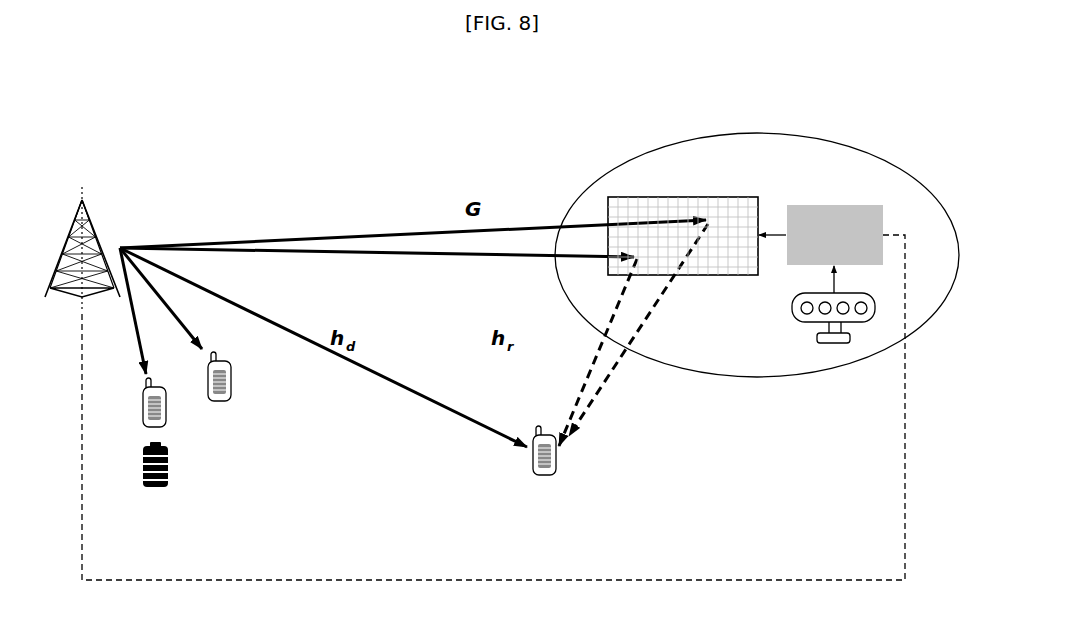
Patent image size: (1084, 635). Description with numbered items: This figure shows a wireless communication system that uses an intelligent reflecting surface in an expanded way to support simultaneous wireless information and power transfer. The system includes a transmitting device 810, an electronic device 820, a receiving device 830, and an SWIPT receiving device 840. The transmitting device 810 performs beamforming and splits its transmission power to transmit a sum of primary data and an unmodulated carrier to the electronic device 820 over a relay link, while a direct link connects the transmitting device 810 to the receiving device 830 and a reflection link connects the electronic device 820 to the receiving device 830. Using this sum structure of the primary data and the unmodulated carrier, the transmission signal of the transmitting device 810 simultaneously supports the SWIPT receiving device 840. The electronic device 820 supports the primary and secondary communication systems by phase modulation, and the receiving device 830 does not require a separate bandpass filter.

The transmitting device 810 is at (82, 188).
The electronic device 820 is at (758, 134).
The receiving device 830 is at (545, 482).
The SWIPT receiving device 840 is at (263, 490).